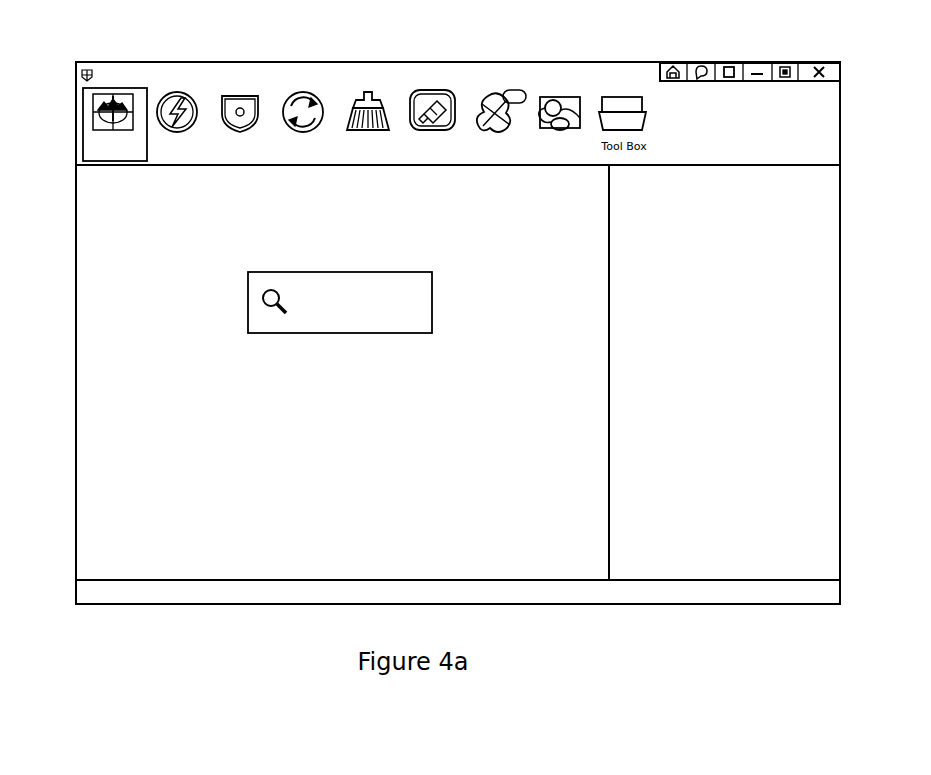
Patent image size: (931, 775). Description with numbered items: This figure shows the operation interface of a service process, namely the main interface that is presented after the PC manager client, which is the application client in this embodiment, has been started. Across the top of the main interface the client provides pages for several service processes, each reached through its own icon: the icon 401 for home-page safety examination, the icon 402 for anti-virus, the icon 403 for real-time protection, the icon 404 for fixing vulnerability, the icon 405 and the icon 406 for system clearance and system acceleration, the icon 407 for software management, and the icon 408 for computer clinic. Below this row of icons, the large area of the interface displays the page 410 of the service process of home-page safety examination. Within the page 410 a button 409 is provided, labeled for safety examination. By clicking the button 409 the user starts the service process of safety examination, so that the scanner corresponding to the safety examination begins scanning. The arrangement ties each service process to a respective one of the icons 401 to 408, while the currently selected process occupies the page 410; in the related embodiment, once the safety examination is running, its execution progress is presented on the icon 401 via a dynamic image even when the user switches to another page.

The icon 401 is at (88, 100).
The icon 402 is at (183, 80).
The icon 403 is at (241, 82).
The icon 404 is at (304, 82).
The icon 405 is at (367, 82).
The icon 406 is at (433, 90).
The icon 407 is at (490, 82).
The icon 408 is at (554, 93).
The button 409 is at (370, 276).
The page 410 is at (86, 313).